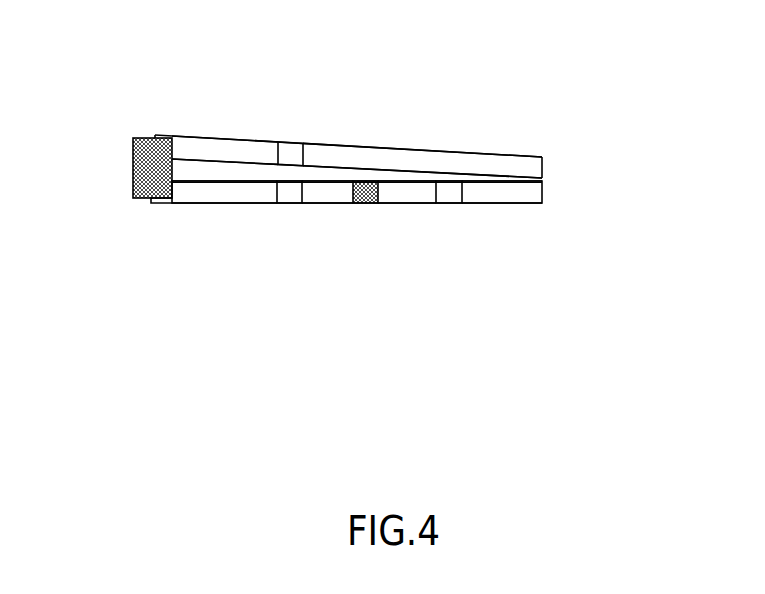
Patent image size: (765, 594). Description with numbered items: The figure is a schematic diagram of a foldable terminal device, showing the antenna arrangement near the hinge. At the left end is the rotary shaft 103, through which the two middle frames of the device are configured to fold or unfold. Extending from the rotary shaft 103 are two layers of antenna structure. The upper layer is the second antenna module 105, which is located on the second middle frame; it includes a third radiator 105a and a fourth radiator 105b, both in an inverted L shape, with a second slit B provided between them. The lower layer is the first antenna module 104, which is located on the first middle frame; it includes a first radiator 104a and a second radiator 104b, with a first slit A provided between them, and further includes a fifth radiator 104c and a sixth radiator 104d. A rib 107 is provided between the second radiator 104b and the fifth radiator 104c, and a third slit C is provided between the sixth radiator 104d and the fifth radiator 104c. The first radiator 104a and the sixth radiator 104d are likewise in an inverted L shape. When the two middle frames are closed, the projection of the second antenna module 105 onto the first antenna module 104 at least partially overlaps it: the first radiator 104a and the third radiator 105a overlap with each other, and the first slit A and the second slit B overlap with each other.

The rotary shaft 103 is at (134, 149).
The second antenna module 105 is at (403, 105).
The third radiator 105a is at (217, 152).
The fourth radiator 105b is at (483, 168).
The first antenna module 104 is at (401, 186).
The first radiator 104a is at (219, 187).
The second radiator 104b is at (320, 192).
The fifth radiator 104c is at (408, 188).
The sixth radiator 104d is at (495, 192).
The rib 107 is at (365, 190).
The first slit A is at (287, 192).
The second slit B is at (286, 151).
The third slit C is at (447, 187).